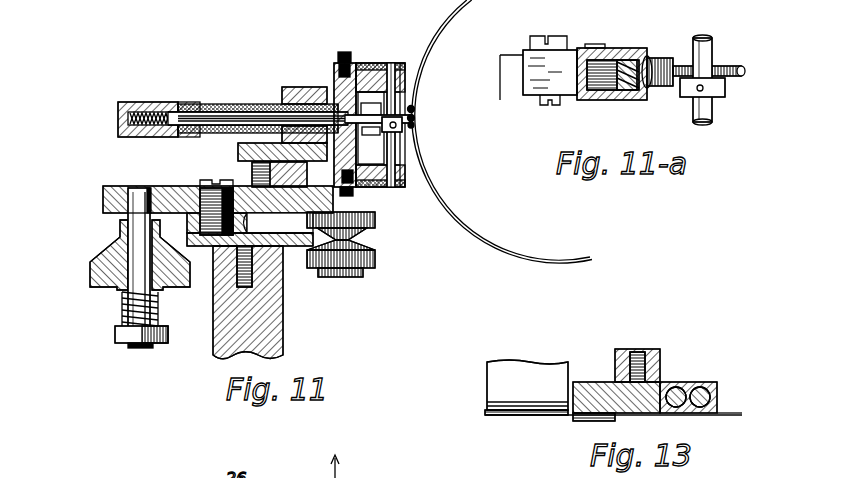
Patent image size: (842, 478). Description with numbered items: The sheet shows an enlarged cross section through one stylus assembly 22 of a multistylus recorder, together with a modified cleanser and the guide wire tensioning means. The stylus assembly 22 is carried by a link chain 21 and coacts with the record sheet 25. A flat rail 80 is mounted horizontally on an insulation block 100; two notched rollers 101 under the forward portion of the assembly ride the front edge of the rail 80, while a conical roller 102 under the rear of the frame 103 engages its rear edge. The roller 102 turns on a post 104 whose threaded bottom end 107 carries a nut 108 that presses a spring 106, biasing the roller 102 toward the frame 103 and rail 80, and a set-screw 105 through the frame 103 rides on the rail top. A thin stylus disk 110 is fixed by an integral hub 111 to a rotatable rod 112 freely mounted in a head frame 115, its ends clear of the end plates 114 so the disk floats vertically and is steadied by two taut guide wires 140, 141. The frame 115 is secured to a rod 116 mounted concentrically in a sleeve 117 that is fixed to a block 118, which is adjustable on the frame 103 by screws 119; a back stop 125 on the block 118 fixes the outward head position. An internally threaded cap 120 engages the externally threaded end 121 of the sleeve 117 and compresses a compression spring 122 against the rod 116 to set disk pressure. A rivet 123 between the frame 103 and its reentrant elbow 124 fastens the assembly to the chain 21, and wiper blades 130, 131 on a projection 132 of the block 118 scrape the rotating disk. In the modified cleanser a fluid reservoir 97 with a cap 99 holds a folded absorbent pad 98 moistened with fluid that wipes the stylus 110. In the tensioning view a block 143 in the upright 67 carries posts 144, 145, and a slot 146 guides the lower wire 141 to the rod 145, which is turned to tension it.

In FIG. 11, the link chain 21 is at (252, 165).
In FIG. 11, the stylus assembly 22 is at (118, 170).
In FIG. 13, the record sheet 25 is at (490, 373).
In FIG. 13, the upright 67 is at (641, 352).
In FIG. 11, the flat rail 80 is at (212, 248).
In FIG. 11A, the fluid reservoir 97 is at (604, 92).
In FIG. 11A, the folded absorbent pad 98 is at (649, 62).
In FIG. 11A, the cap 99 is at (600, 50).
In FIG. 11, the insulation block 100 is at (283, 320).
In FIG. 11, the notched roller 101 is at (372, 262).
In FIG. 11, the conical roller 102 is at (95, 268).
In FIG. 11, the frame 103 is at (106, 198).
In FIG. 11, the post 104 is at (136, 250).
In FIG. 11, the set-screw 105 is at (203, 181).
In FIG. 11, the spring 106 is at (124, 298).
In FIG. 11, the bottom end 107 is at (148, 348).
In FIG. 11, the nut 108 is at (118, 335).
In FIG. 11A, the stylus disk 110 is at (735, 68).
In FIG. 11, the hub 111 is at (400, 129).
In FIG. 11, the stylus support rod 112 is at (391, 66).
In FIG. 11A, the stylus support rod 112 is at (712, 52).
In FIG. 11, the end plate 114 is at (378, 50).
In FIG. 11, the frame 115 is at (337, 66).
In FIG. 11, the rod 116 is at (226, 104).
In FIG. 11, the sleeve 117 is at (268, 85).
In FIG. 11, the block 118 is at (290, 88).
In FIG. 11A, the screw 119 is at (560, 36).
In FIG. 11, the internally threaded cap 120 is at (196, 102).
In FIG. 11, the externally threaded end 121 is at (214, 103).
In FIG. 11, the compression spring 122 is at (118, 116).
In FIG. 11, the rivet 123 is at (280, 223).
In FIG. 11, the reentrant elbow 124 is at (238, 148).
In FIG. 11, the back stop 125 is at (345, 88).
In FIG. 11, the wiper blade 130 is at (371, 127).
In FIG. 11, the wiper blade 131 is at (374, 136).
In FIG. 11A, the projection 132 is at (523, 58).
In FIG. 11, the guide wire 140 is at (413, 109).
In FIG. 11, the guide wire 141 is at (414, 121).
In FIG. 13, the guide wire 141 is at (517, 416).
In FIG. 13, the block 143 is at (584, 382).
In FIG. 13, the tensioning post 144 is at (684, 383).
In FIG. 13, the tensioning post 145 is at (706, 382).
In FIG. 13, the slot 146 is at (585, 420).